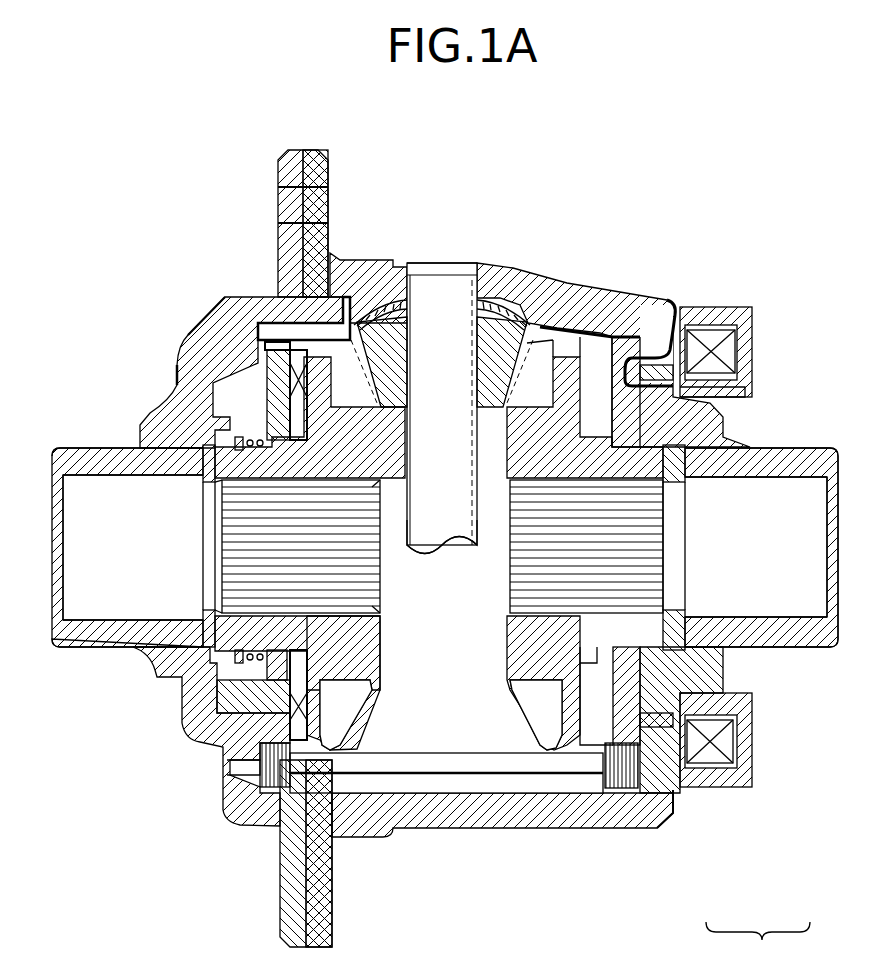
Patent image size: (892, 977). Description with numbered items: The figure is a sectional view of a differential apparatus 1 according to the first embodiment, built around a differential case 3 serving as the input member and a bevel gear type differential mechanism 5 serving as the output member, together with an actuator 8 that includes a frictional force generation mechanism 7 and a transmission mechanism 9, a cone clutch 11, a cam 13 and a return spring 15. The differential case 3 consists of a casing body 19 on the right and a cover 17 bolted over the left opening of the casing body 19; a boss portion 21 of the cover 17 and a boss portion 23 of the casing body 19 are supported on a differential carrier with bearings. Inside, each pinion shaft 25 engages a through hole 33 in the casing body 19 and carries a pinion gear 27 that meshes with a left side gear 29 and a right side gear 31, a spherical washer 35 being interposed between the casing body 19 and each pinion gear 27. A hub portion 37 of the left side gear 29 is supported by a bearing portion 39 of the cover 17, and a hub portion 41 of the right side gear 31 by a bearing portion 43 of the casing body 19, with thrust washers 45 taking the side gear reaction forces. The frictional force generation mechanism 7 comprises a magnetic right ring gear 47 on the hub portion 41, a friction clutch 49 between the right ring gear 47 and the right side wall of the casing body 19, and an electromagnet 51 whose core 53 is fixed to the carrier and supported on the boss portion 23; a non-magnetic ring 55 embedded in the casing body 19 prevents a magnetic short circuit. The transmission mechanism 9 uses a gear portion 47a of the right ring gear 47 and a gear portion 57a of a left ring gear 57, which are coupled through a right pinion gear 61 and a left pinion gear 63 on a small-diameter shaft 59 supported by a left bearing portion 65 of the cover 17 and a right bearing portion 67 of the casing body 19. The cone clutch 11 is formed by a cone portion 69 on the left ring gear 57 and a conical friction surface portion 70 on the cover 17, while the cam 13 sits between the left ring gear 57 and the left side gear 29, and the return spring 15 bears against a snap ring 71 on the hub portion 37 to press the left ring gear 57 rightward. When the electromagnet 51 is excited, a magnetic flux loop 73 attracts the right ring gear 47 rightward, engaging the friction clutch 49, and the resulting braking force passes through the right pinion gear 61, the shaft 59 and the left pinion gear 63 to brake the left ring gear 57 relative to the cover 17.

The differential apparatus 1 is at (643, 107).
The differential case 3 is at (300, 140).
The bevel gear type differential mechanism 5 is at (563, 240).
The frictional force generation mechanism 7 is at (755, 822).
The actuator 8 is at (758, 942).
The transmission mechanism 9 is at (655, 842).
The cone clutch 11 is at (212, 334).
The cam 13 is at (296, 338).
The return spring 15 is at (207, 484).
The cover 17 is at (182, 757).
The casing body 19 is at (447, 835).
The boss portion 21 is at (97, 445).
The boss portion 23 is at (835, 445).
The pinion shaft 25 is at (450, 297).
The pinion gear 27 is at (403, 367).
The left side gear 29 is at (355, 720).
The right side gear 31 is at (548, 748).
The through hole 33 is at (420, 287).
The spherical washer 35 is at (480, 310).
The hub portion 37 is at (383, 652).
The bearing portion 39 is at (222, 607).
The hub portion 41 is at (507, 626).
The bearing portion 43 is at (660, 635).
The thrust washer 45 is at (200, 480).
The right ring gear 47 is at (640, 357).
The gear portion 47a is at (648, 362).
The friction clutch 49 is at (690, 667).
The electromagnet 51 is at (762, 300).
The core 53 is at (752, 397).
The ring 55 is at (752, 762).
The left ring gear 57 is at (400, 520).
The gear portion 57a is at (268, 322).
The small-diameter shaft 59 is at (445, 760).
The right pinion gear 61 is at (625, 795).
The left pinion gear 63 is at (280, 802).
The left bearing portion 65 is at (222, 770).
The right bearing portion 67 is at (677, 807).
The cone portion 69 is at (205, 325).
The conical friction surface portion 70 is at (232, 442).
The snap ring 71 is at (178, 388).
The magnetic flux loop 73 is at (747, 342).